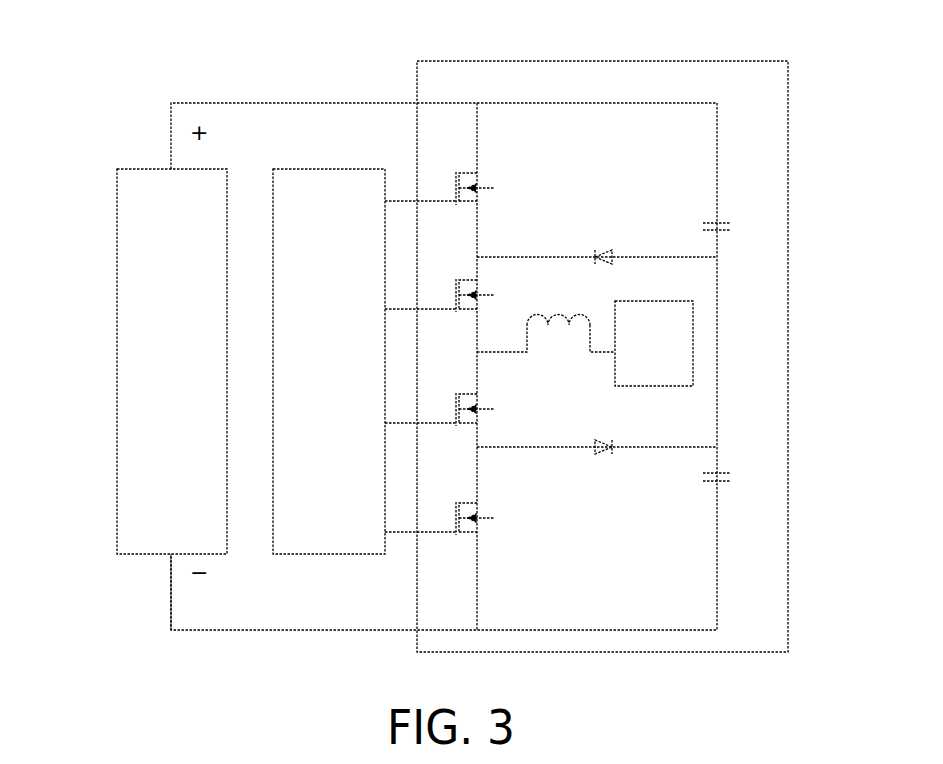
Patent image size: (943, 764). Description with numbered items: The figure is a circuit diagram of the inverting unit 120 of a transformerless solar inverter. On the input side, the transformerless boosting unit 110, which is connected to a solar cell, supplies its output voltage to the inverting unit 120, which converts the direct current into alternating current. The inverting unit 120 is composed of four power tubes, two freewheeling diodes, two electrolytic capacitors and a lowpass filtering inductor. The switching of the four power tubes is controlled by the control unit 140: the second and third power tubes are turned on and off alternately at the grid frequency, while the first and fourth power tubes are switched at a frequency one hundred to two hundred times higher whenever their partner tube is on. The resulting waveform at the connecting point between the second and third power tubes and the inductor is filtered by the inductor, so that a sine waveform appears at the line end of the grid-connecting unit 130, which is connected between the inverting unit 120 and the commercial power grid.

The transformerless boosting unit 110 is at (125, 195).
The inverting unit 120 is at (517, 61).
The grid-connecting unit 130 is at (693, 335).
The control unit 140 is at (348, 189).